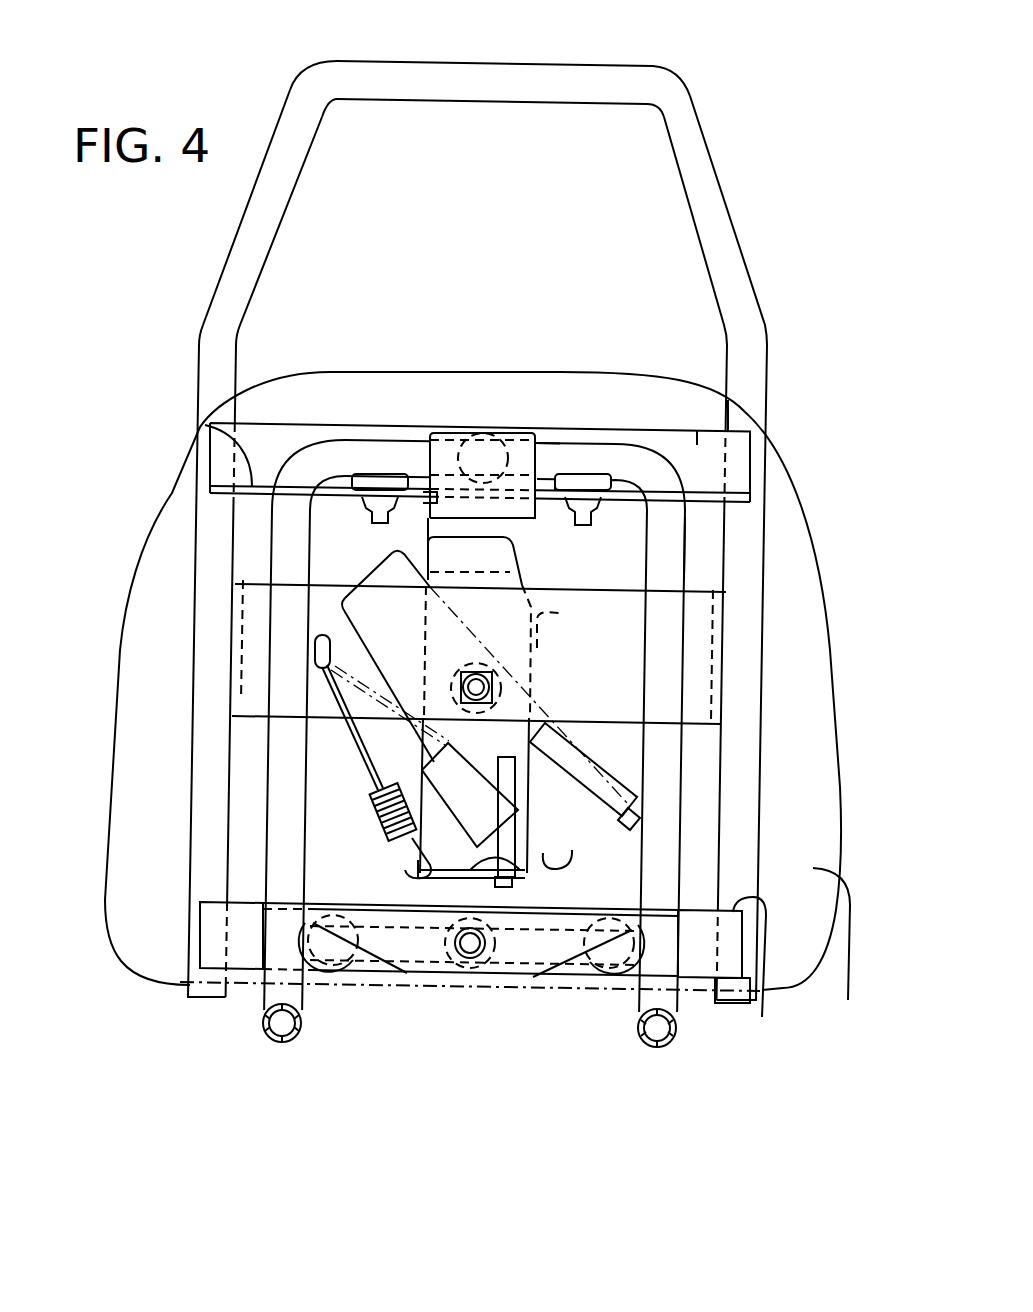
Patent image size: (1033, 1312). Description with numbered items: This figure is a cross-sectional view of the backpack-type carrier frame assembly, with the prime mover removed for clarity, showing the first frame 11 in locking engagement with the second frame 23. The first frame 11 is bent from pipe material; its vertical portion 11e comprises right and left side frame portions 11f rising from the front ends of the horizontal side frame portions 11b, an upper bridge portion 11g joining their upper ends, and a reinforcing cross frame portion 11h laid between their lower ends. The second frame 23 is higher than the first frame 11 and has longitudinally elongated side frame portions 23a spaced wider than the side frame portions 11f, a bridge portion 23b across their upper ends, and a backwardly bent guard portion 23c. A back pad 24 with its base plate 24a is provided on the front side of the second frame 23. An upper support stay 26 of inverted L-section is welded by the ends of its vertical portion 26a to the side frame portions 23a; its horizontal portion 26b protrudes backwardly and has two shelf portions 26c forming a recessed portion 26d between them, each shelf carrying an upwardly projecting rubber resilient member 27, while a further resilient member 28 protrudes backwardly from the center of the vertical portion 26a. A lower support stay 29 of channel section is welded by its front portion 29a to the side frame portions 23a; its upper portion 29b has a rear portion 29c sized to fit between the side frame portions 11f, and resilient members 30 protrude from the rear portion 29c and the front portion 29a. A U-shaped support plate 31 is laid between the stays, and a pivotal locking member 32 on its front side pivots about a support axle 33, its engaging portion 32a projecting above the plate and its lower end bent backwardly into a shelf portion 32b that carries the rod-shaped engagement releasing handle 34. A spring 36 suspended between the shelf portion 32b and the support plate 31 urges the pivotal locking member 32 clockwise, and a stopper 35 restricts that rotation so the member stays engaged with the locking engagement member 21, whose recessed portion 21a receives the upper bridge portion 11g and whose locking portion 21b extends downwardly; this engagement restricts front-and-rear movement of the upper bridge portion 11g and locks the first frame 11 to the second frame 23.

The first frame 11 is at (469, 730).
The side frame portions 11b is at (290, 1043).
The vertical portion 11e is at (688, 558).
The side frame portions 11f is at (232, 622).
The upper bridge portion 11g is at (577, 485).
The reinforcing cross frame portion 11h is at (575, 967).
The locking engagement member 21 is at (522, 487).
The recessed portion 21a is at (560, 440).
The locking portion 21b is at (523, 550).
The second frame 23 is at (468, 504).
The side frame portions 23a is at (197, 570).
The bridge portion 23b is at (463, 70).
The guard portion 23c is at (745, 272).
The back pad 24 is at (491, 710).
The base plate 24a is at (848, 1000).
The upper support stay 26 is at (472, 413).
The vertical portion 26a is at (728, 400).
The horizontal portion 26b is at (205, 425).
The shelf portions 26c is at (330, 500).
The recessed portion 26d is at (413, 523).
The resilient members 27 is at (373, 478).
The resilient member 28 is at (493, 433).
The lower support stay 29 is at (511, 953).
The front portion 29a is at (697, 962).
The upper portion 29b is at (737, 900).
The rear portion 29c is at (423, 975).
The resilient members 30 is at (307, 952).
The support plate 31 is at (258, 698).
The pivotal locking member 32 is at (350, 731).
The engaging portion 32a is at (450, 553).
The shelf portion 32b is at (527, 857).
The support axle 33 is at (495, 683).
The engagement releasing handle 34 is at (510, 777).
The stopper 35 is at (540, 643).
The spring 36 is at (390, 820).